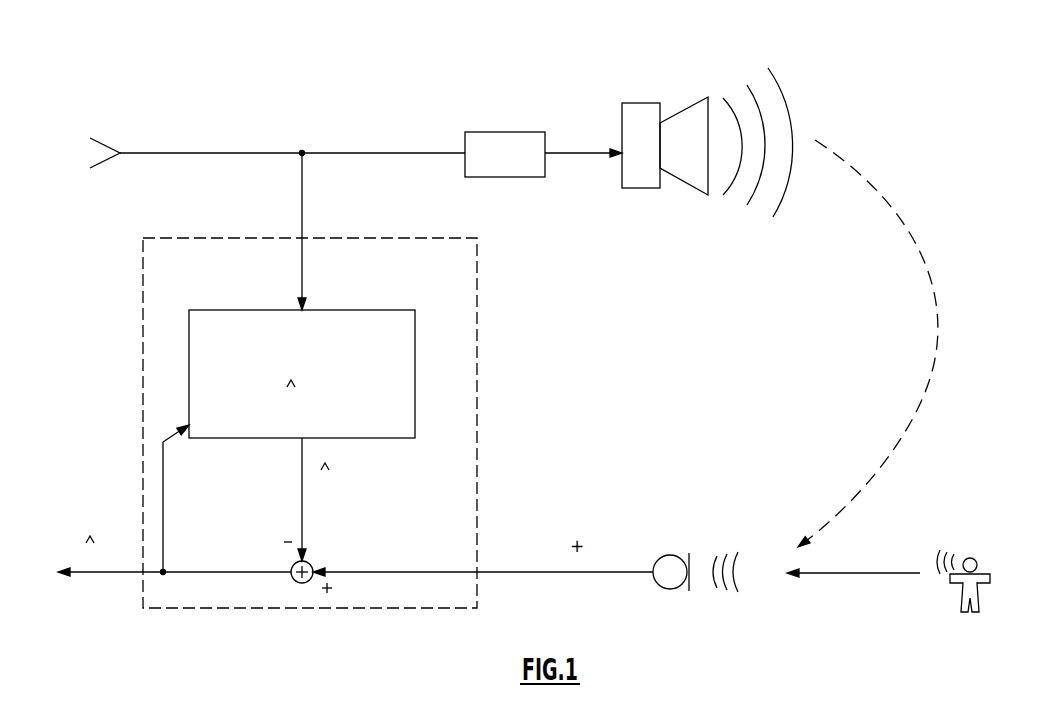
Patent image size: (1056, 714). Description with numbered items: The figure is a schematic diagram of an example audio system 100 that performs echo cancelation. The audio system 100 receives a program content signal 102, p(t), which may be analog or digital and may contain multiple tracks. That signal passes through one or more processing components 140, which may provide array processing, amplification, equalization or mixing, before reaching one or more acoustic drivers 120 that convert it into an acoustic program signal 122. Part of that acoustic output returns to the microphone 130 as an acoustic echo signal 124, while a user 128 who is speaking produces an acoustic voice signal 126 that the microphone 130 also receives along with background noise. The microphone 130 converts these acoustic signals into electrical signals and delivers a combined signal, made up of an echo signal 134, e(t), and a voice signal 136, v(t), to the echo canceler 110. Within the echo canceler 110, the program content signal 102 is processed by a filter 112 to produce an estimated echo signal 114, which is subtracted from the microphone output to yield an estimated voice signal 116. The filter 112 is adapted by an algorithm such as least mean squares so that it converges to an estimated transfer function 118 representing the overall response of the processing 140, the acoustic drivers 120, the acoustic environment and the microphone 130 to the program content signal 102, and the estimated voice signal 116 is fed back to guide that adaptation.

The audio system 100 is at (278, 84).
The program content signal 102 is at (62, 172).
The echo canceler 110 is at (477, 279).
The filter 112 is at (371, 310).
The estimated echo signal 114 is at (355, 472).
The estimated voice signal 116 is at (95, 522).
The estimated transfer function 118 is at (318, 393).
The acoustic driver 120 is at (643, 188).
The acoustic program signal 122 is at (780, 86).
The acoustic echo signal 124 is at (898, 208).
The acoustic voice signal 126 is at (850, 575).
The user 128 is at (985, 574).
The microphone 130 is at (672, 590).
The echo signal 134 is at (543, 527).
The voice signal 136 is at (612, 527).
The processing component 140 is at (498, 132).